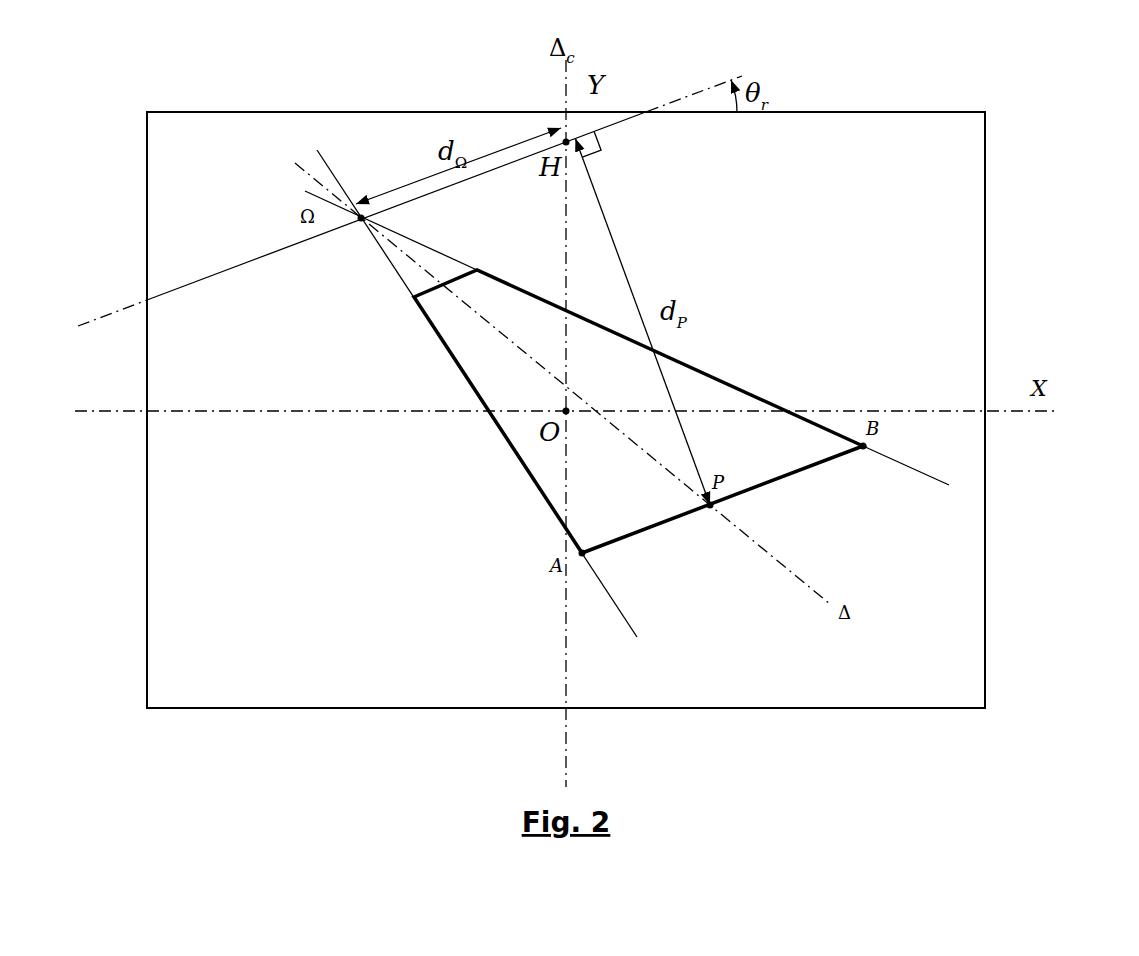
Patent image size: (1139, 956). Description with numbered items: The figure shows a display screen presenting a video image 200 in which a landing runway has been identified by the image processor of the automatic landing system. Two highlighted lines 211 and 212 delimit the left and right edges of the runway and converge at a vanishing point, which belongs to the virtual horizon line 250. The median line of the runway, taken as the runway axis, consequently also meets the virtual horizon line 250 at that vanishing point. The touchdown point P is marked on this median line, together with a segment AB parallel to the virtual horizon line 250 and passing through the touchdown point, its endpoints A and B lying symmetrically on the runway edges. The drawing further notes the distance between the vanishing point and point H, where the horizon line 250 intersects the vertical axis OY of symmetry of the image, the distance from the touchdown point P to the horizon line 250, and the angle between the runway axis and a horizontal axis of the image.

The video image 200 is at (1008, 134).
The left runway edge line 211 is at (502, 413).
The right runway edge line 212 is at (917, 484).
The virtual horizon line 250 is at (408, 201).